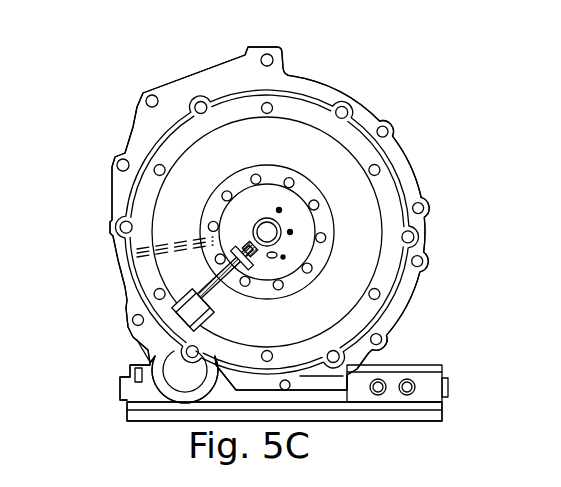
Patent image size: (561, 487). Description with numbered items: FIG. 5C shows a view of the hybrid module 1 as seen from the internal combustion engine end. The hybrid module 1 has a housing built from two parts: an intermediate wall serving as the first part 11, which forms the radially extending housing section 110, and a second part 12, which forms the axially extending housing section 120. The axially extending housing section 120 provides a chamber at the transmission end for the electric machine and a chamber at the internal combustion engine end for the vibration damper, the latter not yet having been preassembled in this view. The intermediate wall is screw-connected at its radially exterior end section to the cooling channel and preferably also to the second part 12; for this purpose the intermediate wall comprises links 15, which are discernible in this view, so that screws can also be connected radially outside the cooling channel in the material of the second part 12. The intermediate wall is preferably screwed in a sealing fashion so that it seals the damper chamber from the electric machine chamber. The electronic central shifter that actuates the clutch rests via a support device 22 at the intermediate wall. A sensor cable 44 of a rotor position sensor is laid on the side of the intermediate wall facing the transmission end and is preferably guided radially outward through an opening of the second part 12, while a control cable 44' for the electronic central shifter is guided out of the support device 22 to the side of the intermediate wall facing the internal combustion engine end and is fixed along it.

The hybrid module 1 is at (93, 112).
The first part 11 is at (277, 130).
The second part 12 is at (408, 287).
The links 15 is at (341, 105).
The support device 22 is at (293, 208).
The sensor cable 44 is at (122, 254).
The control cable 44' is at (327, 300).
The radially extending housing section 110 is at (362, 200).
The axially extending housing section 120 is at (415, 142).